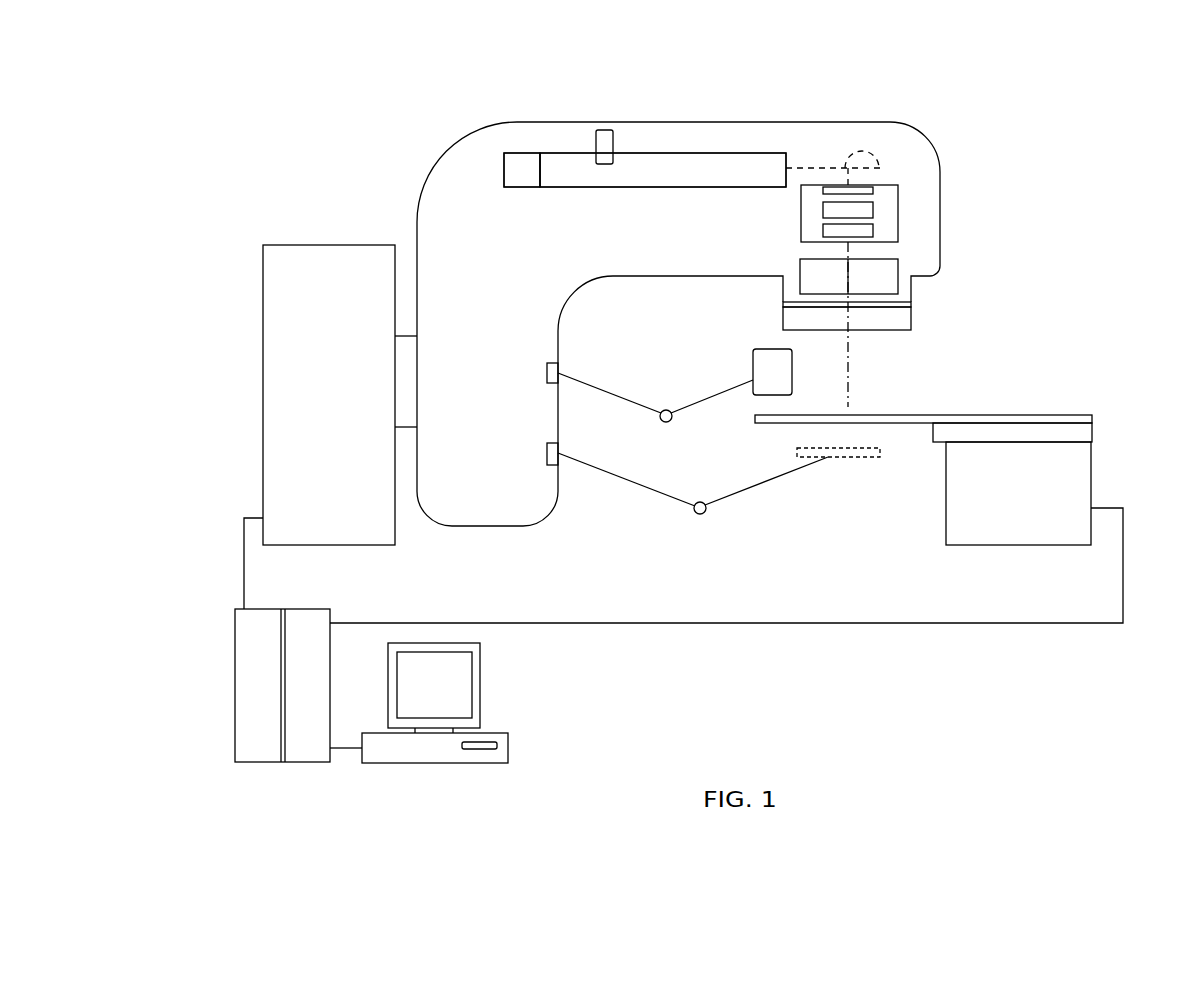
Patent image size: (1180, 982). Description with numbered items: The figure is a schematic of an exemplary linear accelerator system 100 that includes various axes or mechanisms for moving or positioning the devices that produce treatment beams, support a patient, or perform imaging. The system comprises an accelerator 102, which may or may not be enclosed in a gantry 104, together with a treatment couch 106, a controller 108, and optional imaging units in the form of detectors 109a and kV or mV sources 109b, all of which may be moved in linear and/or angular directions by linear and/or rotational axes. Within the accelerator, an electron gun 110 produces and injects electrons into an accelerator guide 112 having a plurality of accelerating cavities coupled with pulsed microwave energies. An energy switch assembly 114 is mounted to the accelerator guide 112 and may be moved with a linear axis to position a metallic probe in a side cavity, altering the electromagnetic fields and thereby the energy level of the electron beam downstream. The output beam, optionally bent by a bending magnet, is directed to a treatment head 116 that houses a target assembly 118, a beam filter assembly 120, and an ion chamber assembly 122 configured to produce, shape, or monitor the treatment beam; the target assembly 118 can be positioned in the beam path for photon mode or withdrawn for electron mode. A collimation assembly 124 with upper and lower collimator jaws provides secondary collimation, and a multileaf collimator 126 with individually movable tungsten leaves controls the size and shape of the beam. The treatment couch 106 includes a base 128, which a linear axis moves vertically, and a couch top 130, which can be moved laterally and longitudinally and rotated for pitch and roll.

The linear accelerator system 100 is at (345, 163).
The accelerator 102 is at (790, 148).
The gantry 104 is at (932, 140).
The treatment couch 106 is at (920, 503).
The controller 108 is at (340, 770).
The detectors 109a is at (797, 452).
The kV or mV sources 109b is at (753, 358).
The electron gun 110 is at (523, 160).
The accelerator guide 112 is at (698, 153).
The energy switch assembly 114 is at (605, 138).
The treatment head 116 is at (800, 222).
The target assembly 118 is at (870, 193).
The beam filter assembly 120 is at (872, 210).
The ion chamber assembly 122 is at (872, 232).
The collimation assembly 124 is at (800, 268).
The multileaf collimator 126 is at (912, 320).
The base 128 is at (1085, 477).
The couch top 130 is at (912, 417).